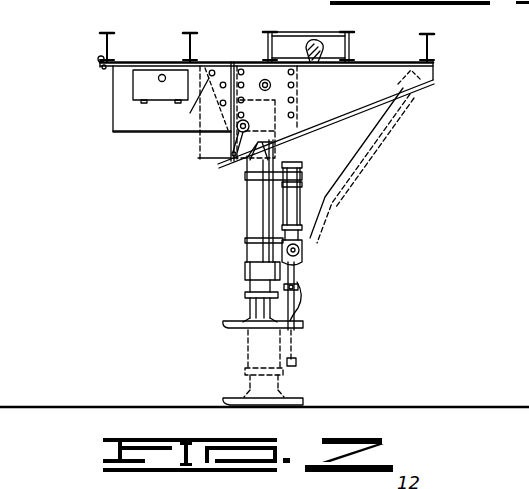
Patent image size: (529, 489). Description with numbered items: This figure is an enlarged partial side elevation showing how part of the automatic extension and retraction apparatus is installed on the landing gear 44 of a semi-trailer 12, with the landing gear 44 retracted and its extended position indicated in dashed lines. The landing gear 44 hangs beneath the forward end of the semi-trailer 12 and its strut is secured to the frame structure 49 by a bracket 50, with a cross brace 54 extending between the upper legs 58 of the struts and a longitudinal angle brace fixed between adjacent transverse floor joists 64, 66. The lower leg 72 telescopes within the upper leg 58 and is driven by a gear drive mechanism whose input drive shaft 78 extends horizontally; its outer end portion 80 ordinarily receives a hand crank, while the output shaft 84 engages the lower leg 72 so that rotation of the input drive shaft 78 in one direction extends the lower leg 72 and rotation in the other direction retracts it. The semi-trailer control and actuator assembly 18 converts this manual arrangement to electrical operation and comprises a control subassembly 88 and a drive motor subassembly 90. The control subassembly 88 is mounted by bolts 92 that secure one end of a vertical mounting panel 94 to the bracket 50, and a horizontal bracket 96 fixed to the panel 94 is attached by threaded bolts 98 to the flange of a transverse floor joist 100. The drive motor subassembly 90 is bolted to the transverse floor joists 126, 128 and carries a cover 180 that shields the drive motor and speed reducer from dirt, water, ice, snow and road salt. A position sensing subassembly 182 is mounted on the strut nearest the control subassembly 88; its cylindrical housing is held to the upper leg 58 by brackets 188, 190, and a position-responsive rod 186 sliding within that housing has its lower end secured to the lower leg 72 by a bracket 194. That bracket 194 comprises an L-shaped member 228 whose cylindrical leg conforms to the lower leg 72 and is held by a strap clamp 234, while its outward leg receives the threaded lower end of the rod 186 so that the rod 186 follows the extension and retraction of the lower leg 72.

The semi-trailer 12 is at (431, 45).
The semi-trailer control and actuator assembly 18 is at (156, 133).
The landing gear 44 is at (257, 213).
The frame structure 49 is at (187, 45).
The bracket 50 is at (352, 99).
The cross brace 54 is at (322, 40).
The upper leg 58 is at (293, 46).
The transverse semi-trailer floor joist 64 is at (267, 42).
The transverse semi-trailer floor joist 66 is at (351, 46).
The lower leg 72 is at (255, 308).
The input drive shaft 78 is at (238, 136).
The outer end portion 80 is at (226, 147).
The output shaft 84 is at (268, 79).
The control subassembly 88 is at (158, 109).
The drive motor subassembly 90 is at (197, 152).
The bolts 92 is at (220, 104).
The vertical mounting panel 94 is at (158, 120).
The horizontal bracket 96 is at (99, 58).
The threaded bolts 98 is at (100, 65).
The transverse floor joist 100 is at (105, 33).
The transverse floor joist 126 is at (190, 32).
The transverse floor joist 128 is at (268, 31).
The cover 180 is at (248, 162).
The position sensing subassembly 182 is at (290, 207).
The position-responsive rod 186 is at (297, 270).
The bracket 188 is at (300, 176).
The bracket 190 is at (301, 247).
The bracket 194 is at (298, 305).
The L-shaped member 228 is at (297, 289).
The strap clamp 234 is at (250, 296).